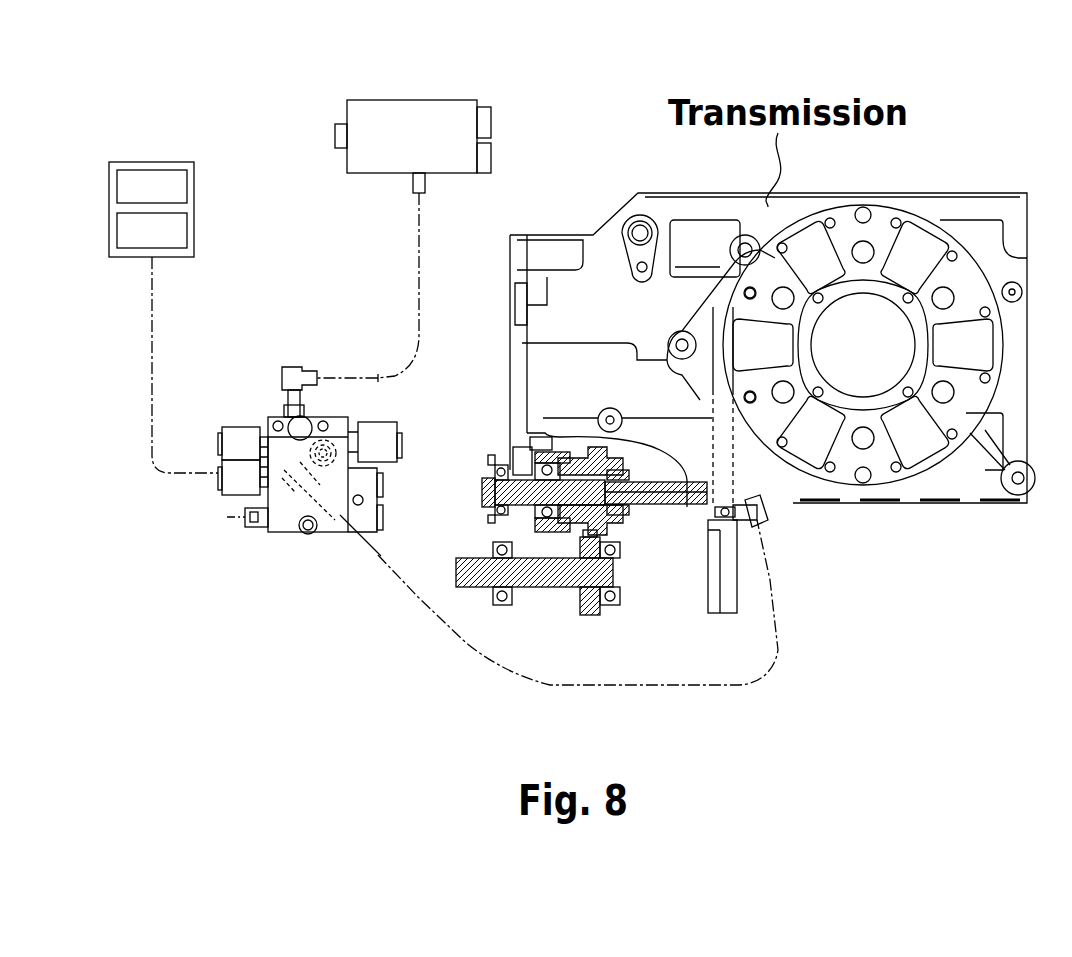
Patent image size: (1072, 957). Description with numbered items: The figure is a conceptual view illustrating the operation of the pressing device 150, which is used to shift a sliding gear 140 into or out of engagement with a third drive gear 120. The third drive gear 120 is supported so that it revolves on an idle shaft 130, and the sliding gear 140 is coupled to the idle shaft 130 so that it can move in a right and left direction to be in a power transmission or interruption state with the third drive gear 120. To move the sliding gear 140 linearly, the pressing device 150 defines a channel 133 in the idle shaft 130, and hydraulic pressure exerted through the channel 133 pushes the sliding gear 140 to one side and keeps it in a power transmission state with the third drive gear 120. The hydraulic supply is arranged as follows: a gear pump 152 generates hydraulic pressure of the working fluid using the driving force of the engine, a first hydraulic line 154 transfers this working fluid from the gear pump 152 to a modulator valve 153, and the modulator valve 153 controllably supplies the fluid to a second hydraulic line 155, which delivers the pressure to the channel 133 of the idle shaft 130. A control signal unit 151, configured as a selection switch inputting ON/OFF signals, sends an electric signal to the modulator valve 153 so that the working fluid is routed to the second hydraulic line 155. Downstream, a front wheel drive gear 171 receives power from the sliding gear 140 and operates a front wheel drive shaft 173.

The third drive gear 120 is at (533, 450).
The idle shaft 130 is at (490, 498).
The channel 133 is at (690, 515).
The sliding gear 140 is at (580, 457).
The pressing device 150 is at (258, 140).
The control signal unit 151 is at (194, 207).
The gear pump 152 is at (417, 115).
The modulator valve 153 is at (243, 438).
The first hydraulic line 154 is at (419, 250).
The second hydraulic line 155 is at (362, 550).
The front wheel drive gear 171 is at (583, 614).
The front wheel drive shaft 173 is at (533, 582).